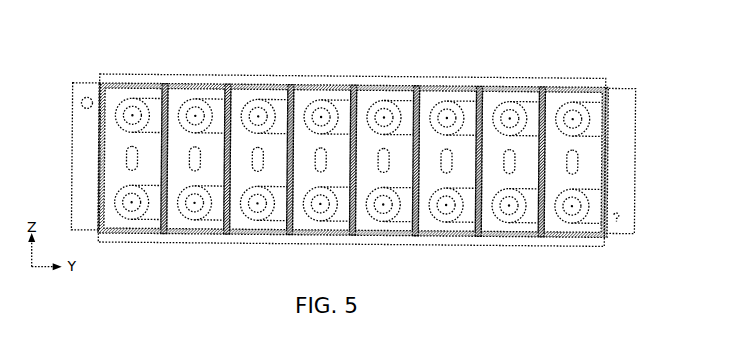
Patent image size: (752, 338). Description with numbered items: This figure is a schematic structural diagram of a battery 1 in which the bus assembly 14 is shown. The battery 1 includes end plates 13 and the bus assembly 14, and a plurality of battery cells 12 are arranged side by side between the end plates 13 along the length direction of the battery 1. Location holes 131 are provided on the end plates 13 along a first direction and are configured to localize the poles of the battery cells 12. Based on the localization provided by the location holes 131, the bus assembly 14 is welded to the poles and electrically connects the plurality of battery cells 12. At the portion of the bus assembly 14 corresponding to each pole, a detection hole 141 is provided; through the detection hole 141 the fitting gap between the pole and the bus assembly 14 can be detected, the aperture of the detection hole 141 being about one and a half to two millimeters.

The battery 1 is at (351, 141).
The battery cell 12 is at (279, 89).
The end plate 13 is at (80, 164).
The location hole 131 is at (86, 92).
The bus assembly 14 is at (337, 102).
The detection hole 141 is at (385, 109).